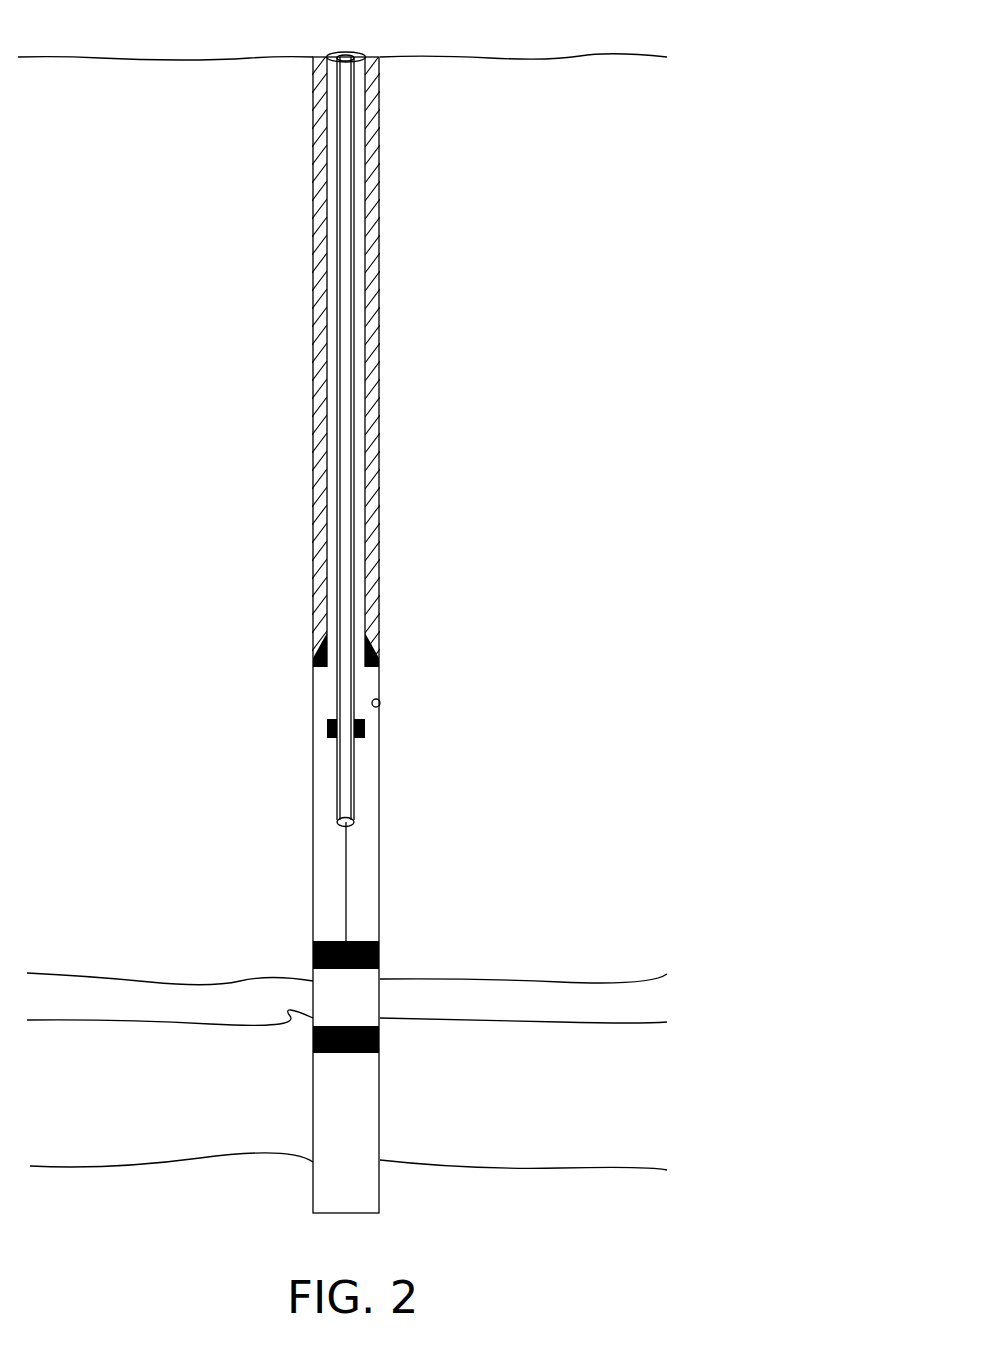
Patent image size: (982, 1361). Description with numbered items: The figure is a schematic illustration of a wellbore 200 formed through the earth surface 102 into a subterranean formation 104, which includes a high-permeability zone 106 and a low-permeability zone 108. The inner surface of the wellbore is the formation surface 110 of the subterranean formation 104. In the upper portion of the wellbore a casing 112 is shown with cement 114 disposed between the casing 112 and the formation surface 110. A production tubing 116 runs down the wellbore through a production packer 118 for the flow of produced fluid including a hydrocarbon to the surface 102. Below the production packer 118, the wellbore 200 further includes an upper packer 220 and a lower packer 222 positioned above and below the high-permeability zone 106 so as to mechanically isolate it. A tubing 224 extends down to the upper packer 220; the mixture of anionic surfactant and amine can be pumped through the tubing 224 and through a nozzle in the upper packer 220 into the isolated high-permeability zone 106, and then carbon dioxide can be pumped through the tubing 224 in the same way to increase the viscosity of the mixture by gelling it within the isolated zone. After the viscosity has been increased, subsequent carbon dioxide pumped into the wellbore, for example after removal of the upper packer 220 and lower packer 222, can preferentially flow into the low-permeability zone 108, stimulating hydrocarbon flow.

The wellbore 200 is at (210, 232).
The earth surface 102 is at (267, 56).
The subterranean formation 104 is at (498, 430).
The high-permeability zone 106 is at (155, 1002).
The low-permeability zone 108 is at (197, 1145).
The formation surface 110 is at (380, 704).
The casing 112 is at (320, 103).
The cement 114 is at (381, 306).
The production tubing 116 is at (337, 548).
The production packer 118 is at (323, 740).
The upper packer 220 is at (313, 948).
The lower packer 222 is at (381, 1040).
The tubing 224 is at (347, 876).